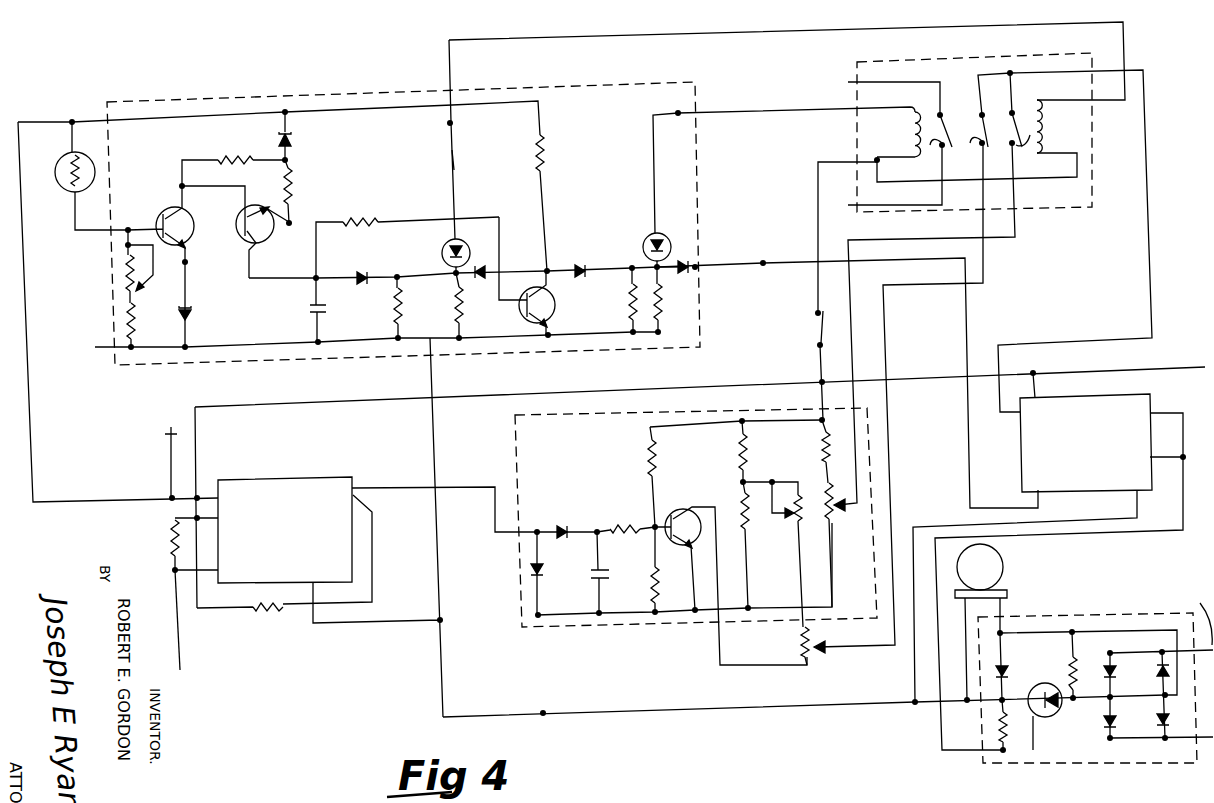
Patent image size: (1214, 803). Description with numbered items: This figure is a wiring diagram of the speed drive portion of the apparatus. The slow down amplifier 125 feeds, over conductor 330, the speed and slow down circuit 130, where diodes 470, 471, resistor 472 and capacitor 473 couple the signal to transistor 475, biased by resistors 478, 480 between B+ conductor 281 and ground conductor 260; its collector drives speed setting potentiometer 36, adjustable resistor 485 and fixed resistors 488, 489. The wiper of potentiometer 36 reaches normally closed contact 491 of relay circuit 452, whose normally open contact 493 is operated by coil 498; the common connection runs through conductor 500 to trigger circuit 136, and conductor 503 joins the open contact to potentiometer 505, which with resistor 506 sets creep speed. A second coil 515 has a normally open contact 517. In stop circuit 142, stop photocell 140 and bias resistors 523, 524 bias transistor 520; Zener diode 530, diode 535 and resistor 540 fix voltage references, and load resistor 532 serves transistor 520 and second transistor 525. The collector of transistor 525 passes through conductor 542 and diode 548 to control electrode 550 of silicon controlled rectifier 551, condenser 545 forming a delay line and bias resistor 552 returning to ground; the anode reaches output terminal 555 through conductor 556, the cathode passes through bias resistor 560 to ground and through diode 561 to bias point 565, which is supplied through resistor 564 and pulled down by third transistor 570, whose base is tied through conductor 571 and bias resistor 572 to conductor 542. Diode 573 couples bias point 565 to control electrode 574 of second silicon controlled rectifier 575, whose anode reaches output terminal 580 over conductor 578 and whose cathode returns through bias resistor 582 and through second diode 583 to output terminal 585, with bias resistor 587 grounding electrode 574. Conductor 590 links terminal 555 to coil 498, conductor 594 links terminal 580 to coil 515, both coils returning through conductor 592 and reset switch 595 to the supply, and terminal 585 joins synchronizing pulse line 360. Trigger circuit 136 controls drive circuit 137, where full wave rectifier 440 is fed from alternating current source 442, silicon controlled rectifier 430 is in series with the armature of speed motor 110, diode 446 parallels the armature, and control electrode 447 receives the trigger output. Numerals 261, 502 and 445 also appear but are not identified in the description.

The stop circuit 142 is at (208, 100).
The stop photocell 140 is at (59, 168).
The transistor 520 is at (170, 207).
The load resistor 532 is at (254, 155).
The diode 535 is at (292, 140).
The resistor 540 is at (294, 176).
The second transistor 525 is at (246, 214).
The bias resistor 523 is at (134, 284).
The bias resistor 524 is at (137, 329).
The Zener diode 530 is at (191, 313).
The conductor 542 is at (250, 280).
The condenser 545 is at (314, 313).
The bias resistor 572 is at (407, 237).
The conductor 571 is at (464, 218).
The conductor 590 is at (462, 67).
The output terminal 555 is at (453, 122).
The conductor 556 is at (455, 157).
The silicon controlled rectifier 551 is at (446, 242).
The control electrode 550 is at (450, 270).
The synchronizing pulse line 360 is at (763, 263).
The diode 548 is at (353, 266).
The bias resistor 552 is at (395, 310).
The bias resistor 560 is at (456, 307).
The diode 561 is at (485, 265).
The bias point 565 is at (550, 266).
The diode 573 is at (579, 283).
The third transistor 570 is at (525, 317).
The resistor 564 is at (545, 152).
The ground conductor 260 is at (100, 347).
The output terminal 580 is at (680, 110).
The conductor 578 is at (652, 121).
The conductor 594 is at (758, 112).
The second silicon controlled rectifier 575 is at (649, 237).
The control electrode 574 is at (640, 266).
The bias resistor 587 is at (630, 301).
The bias resistor 582 is at (661, 322).
The second diode 583 is at (683, 262).
The output terminal 585 is at (700, 270).
The conductor 592 is at (816, 180).
The reset switch 595 is at (817, 330).
The normally open contact 517 is at (977, 167).
The second relay coil 515 is at (915, 126).
The relay coil 498 is at (1044, 120).
The normally closed contact 491 is at (918, 158).
The normally open contact 493 is at (1031, 143).
The relay circuit 452 is at (1054, 53).
The conductor 502 is at (894, 414).
The conductor 503 is at (899, 240).
The conductor 500 is at (1099, 343).
The B+ conductor 281 is at (603, 392).
The slow down amplifier 125 is at (270, 480).
The conductor 330 is at (372, 488).
The conductor 261 is at (182, 628).
The speed and slow down control circuit 130 is at (515, 430).
The diode 470 is at (566, 512).
The resistor 472 is at (627, 522).
The diode 471 is at (544, 568).
The capacitor 473 is at (596, 575).
The resistor 478 is at (648, 452).
The transistor 475 is at (690, 500).
The resistor 480 is at (654, 590).
The fixed resistor 488 is at (751, 442).
The fixed resistor 489 is at (748, 526).
The adjustable resistor 485 is at (790, 522).
The speed setting potentiometer 36 is at (799, 640).
The resistor 506 is at (822, 448).
The potentiometer 505 is at (822, 496).
The trigger circuit 136 is at (1160, 394).
The speed motor 110 is at (1003, 568).
The silicon controlled rectifier drive 137 is at (1118, 612).
The alternating current source 442 is at (1184, 617).
The diode 446 is at (1005, 665).
The resistor 445 is at (1074, 660).
The silicon controlled rectifier 430 is at (1045, 684).
The control electrode 447 is at (1035, 714).
The full wave rectifier 440 is at (1150, 714).